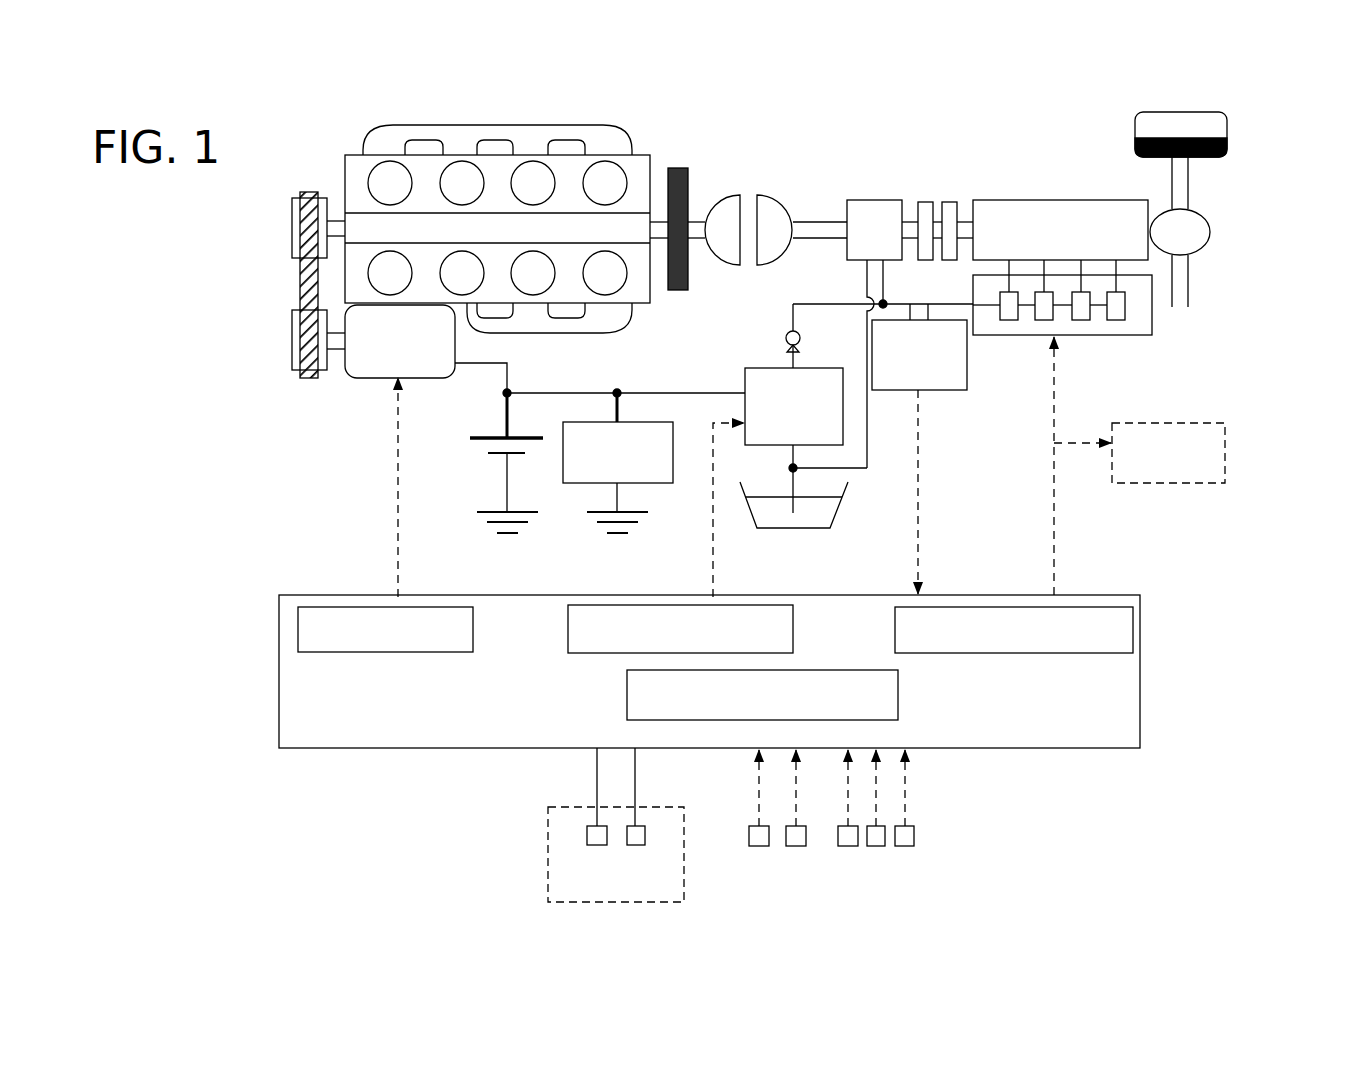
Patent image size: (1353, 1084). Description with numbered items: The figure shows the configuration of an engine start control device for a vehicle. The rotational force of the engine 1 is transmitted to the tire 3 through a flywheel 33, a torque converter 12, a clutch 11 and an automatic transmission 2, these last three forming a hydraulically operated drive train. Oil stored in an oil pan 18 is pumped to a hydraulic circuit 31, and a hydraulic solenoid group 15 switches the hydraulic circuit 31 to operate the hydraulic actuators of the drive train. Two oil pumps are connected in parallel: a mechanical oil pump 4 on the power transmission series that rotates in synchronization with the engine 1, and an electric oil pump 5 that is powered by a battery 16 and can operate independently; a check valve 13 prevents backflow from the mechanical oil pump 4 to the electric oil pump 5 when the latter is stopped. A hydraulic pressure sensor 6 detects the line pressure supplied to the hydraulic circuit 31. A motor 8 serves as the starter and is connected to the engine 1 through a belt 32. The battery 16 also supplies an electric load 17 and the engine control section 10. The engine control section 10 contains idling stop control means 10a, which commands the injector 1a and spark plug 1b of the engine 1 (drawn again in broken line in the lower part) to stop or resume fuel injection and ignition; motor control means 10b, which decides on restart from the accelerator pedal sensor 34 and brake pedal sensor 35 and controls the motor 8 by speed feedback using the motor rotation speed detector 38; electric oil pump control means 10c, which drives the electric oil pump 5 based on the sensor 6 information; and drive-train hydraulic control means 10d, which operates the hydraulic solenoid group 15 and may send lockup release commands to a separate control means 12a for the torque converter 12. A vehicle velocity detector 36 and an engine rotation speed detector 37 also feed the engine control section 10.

The engine 1 is at (338, 157).
The injector 1a is at (585, 833).
The spark plug 1b is at (647, 833).
The automatic transmission 2 is at (995, 195).
The tire 3 is at (1132, 140).
The mechanical oil pump 4 is at (851, 197).
The electric oil pump 5 is at (744, 371).
The hydraulic pressure sensor 6 is at (969, 362).
The motor 8 is at (380, 382).
The engine control section 10 is at (716, 641).
The idling stop control means 10a is at (900, 695).
The motor control means 10b is at (476, 630).
The electric oil pump control means 10c is at (796, 630).
The drive-train hydraulic control means 10d is at (892, 641).
The clutch 11 is at (936, 197).
The torque converter 12 is at (748, 190).
The control means 12a is at (1227, 478).
The check valve 13 is at (785, 333).
The hydraulic solenoid group 15 is at (1119, 323).
The battery 16 is at (468, 451).
The electric load 17 is at (669, 486).
The oil pan 18 is at (841, 510).
The hydraulic circuit 31 is at (966, 300).
The belt 32 is at (308, 382).
The flywheel 33 is at (682, 294).
The accelerator pedal sensor 34 is at (760, 848).
The brake pedal sensor 35 is at (797, 848).
The vehicle velocity detector 36 is at (848, 848).
The engine rotation speed detector 37 is at (877, 848).
The motor rotation speed detector 38 is at (906, 848).